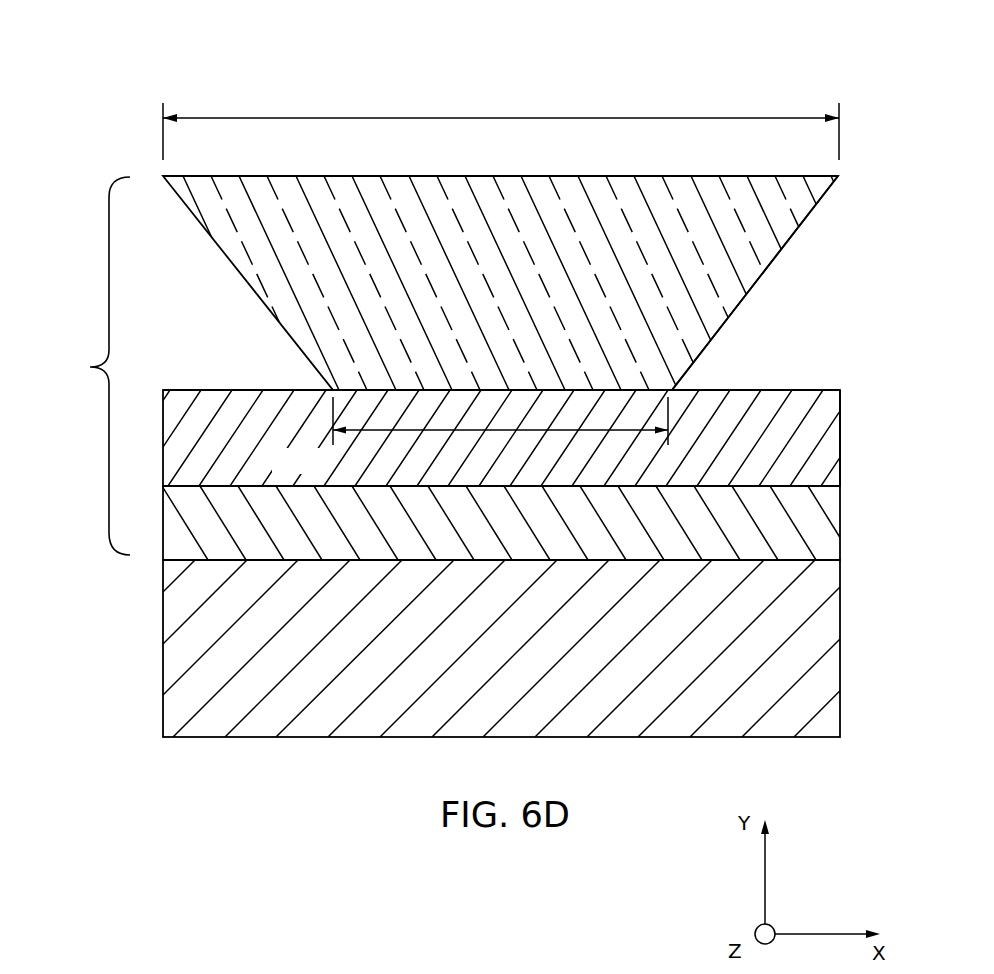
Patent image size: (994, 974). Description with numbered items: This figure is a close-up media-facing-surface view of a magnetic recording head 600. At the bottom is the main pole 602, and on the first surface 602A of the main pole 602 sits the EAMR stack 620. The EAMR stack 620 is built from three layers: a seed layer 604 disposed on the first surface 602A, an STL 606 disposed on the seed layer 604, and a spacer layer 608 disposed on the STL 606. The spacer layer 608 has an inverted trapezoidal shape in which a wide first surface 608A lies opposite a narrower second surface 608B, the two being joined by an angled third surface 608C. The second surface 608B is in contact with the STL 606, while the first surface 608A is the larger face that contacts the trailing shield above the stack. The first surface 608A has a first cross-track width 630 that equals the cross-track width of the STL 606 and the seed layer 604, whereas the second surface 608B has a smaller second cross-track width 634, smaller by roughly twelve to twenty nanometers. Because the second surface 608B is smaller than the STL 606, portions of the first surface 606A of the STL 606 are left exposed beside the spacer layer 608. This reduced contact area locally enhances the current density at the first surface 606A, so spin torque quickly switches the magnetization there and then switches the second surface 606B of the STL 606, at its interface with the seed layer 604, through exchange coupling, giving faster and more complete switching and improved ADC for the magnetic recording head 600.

The magnetic recording head 600 is at (136, 48).
The main pole 602 is at (235, 700).
The first surface of the main pole 602A is at (220, 560).
The seed layer 604 is at (233, 535).
The STL 606 is at (216, 466).
The first surface of the STL 606A is at (776, 391).
The second surface of the STL 606B is at (840, 445).
The spacer layer 608 is at (290, 227).
The first surface of the spacer layer 608A is at (372, 190).
The second surface of the spacer layer 608B is at (343, 390).
The third surface of the spacer layer 608C is at (755, 227).
The EAMR stack 620 is at (81, 366).
The first cross-track width 630 is at (534, 118).
The second cross-track width 634 is at (383, 430).